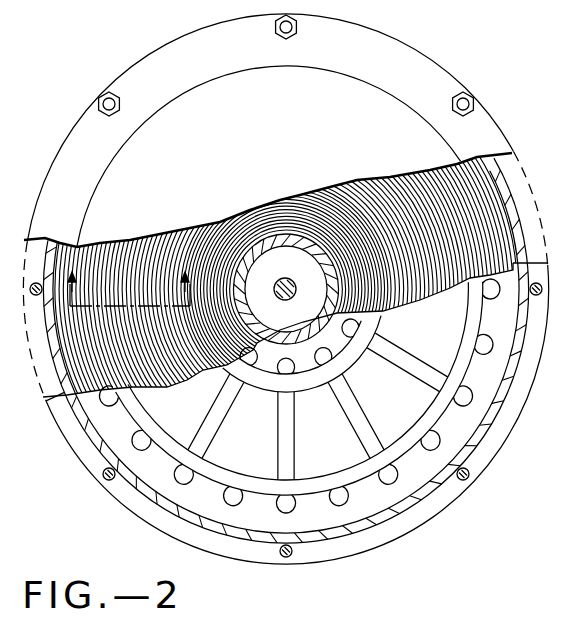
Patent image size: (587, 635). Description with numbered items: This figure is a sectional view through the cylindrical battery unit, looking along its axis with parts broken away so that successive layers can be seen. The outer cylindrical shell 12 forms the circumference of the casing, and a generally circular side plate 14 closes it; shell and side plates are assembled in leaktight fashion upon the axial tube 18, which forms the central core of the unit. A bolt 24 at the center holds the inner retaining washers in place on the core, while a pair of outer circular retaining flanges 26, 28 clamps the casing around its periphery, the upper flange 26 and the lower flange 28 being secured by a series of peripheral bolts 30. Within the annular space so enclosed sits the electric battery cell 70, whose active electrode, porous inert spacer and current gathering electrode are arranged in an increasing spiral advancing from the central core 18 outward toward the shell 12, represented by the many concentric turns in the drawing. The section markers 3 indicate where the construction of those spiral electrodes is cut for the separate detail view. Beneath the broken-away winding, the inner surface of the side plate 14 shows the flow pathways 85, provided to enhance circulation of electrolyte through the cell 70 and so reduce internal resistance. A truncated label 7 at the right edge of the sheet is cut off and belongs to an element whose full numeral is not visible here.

The section line 3- 3 is at (128, 278).
The partial reference numeral (cut off at sheet edge) 7 is at (583, 94).
The outer cylindrical shell 12 is at (487, 420).
The side plate 14 is at (292, 119).
The axial tube 18 is at (277, 240).
The bolt 24 is at (284, 278).
The outer circular retaining flange 26 is at (142, 83).
The outer circular retaining flange 28 is at (447, 497).
The bolts 30 is at (474, 101).
The electric battery cell 70 is at (455, 233).
The flow pathways 85 is at (472, 340).